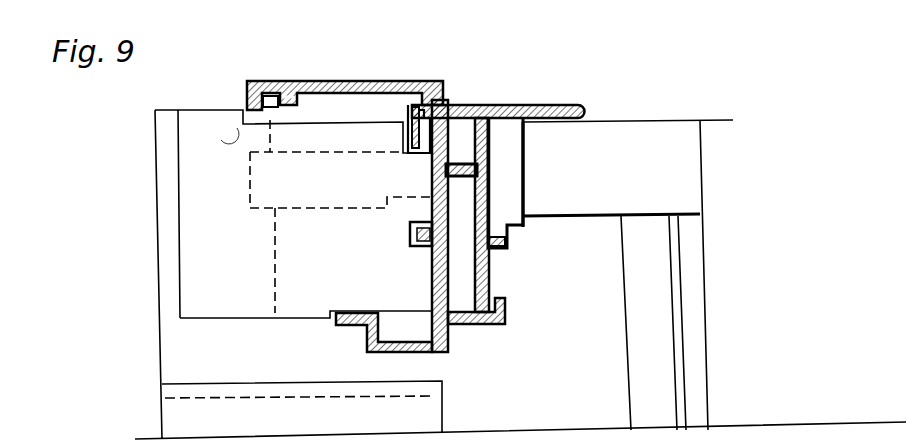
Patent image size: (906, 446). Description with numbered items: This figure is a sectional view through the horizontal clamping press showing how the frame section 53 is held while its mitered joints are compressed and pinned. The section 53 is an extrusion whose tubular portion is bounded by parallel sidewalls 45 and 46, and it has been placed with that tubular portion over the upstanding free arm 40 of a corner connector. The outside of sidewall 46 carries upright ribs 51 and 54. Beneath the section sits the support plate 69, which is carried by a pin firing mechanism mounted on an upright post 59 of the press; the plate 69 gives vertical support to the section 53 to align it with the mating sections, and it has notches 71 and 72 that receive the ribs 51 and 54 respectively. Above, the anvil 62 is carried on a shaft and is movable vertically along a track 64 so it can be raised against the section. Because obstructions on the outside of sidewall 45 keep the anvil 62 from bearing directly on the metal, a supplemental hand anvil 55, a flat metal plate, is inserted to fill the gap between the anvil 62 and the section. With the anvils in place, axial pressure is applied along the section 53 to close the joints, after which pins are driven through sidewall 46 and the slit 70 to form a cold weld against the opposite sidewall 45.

The upstanding free arm 40 is at (462, 243).
The sidewall 45 is at (497, 300).
The sidewall 46 is at (457, 332).
The rib 51 is at (421, 112).
The section 53 is at (341, 81).
The rib 54 is at (460, 246).
The second anvil means 55 is at (491, 166).
The upright post 59 is at (163, 356).
The anvil 62 is at (596, 174).
The track 64 is at (692, 240).
The support plate 69 is at (291, 246).
The slit 70 is at (462, 165).
The notch 71 is at (403, 130).
The notch 72 is at (412, 250).